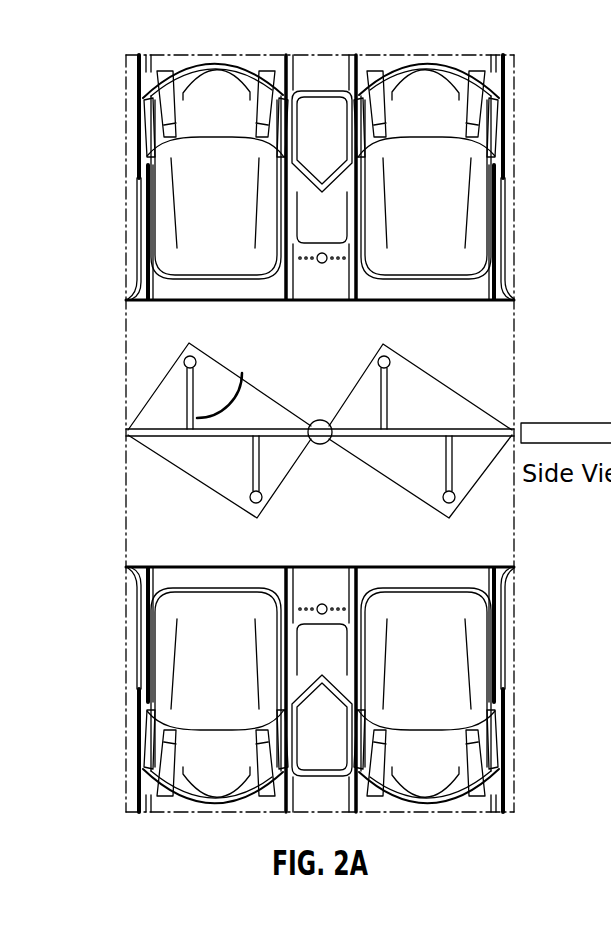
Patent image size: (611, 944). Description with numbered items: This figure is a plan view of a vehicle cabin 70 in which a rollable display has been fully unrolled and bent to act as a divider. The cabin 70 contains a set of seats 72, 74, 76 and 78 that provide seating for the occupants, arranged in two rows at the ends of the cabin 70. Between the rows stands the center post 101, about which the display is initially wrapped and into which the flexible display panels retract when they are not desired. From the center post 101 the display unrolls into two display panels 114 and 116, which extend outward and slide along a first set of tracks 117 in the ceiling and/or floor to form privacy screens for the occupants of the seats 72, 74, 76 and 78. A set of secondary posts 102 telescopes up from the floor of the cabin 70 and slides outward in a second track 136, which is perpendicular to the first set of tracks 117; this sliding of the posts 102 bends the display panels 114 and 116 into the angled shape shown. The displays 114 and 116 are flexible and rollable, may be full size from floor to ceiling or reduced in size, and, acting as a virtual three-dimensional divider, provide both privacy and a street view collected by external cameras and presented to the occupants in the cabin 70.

The cabin 70 is at (320, 438).
The seat 72 is at (155, 205).
The seat 74 is at (475, 210).
The seat 76 is at (155, 646).
The seat 78 is at (475, 650).
The center post 101 is at (318, 421).
The secondary posts 102 is at (197, 362).
The display panel 114 is at (152, 393).
The display panel 116 is at (213, 498).
The first set of tracks 117 is at (398, 428).
The second track 136 is at (242, 374).